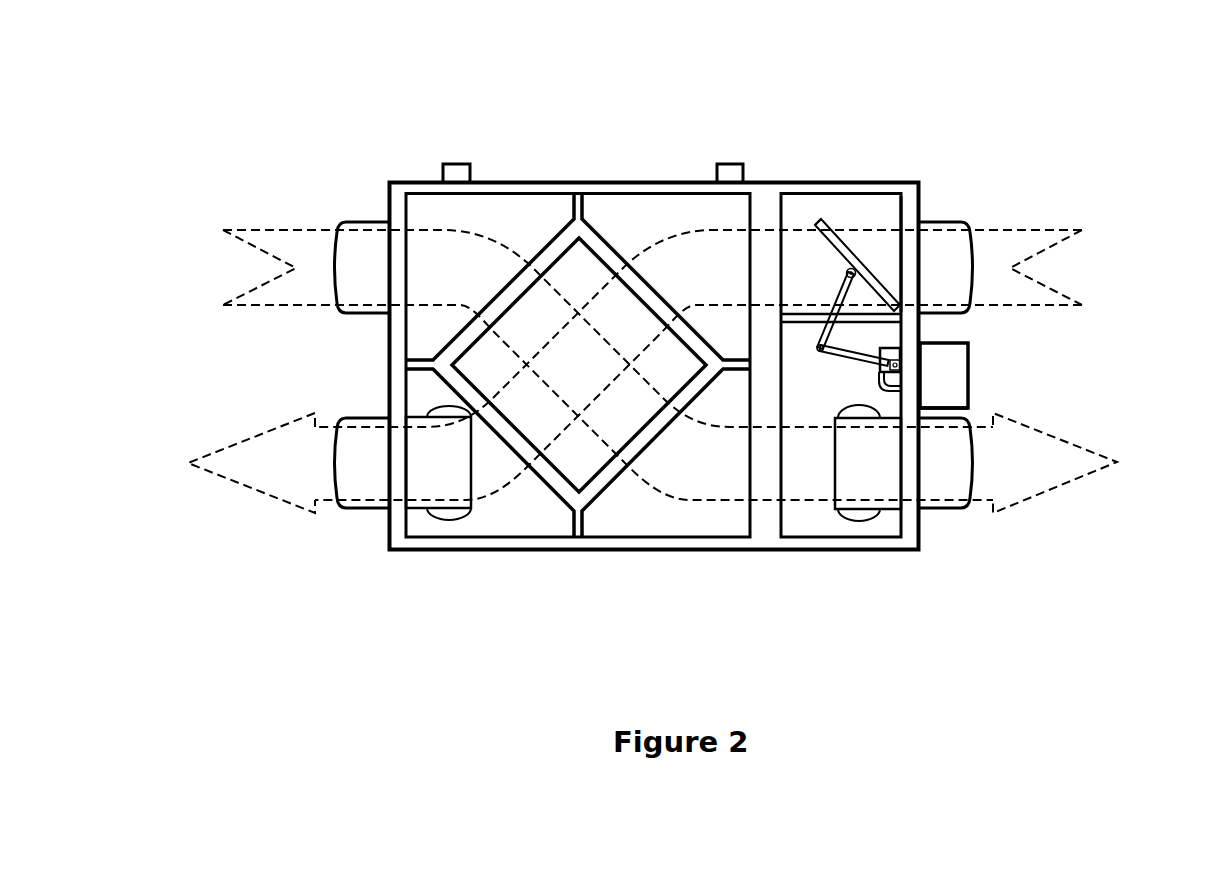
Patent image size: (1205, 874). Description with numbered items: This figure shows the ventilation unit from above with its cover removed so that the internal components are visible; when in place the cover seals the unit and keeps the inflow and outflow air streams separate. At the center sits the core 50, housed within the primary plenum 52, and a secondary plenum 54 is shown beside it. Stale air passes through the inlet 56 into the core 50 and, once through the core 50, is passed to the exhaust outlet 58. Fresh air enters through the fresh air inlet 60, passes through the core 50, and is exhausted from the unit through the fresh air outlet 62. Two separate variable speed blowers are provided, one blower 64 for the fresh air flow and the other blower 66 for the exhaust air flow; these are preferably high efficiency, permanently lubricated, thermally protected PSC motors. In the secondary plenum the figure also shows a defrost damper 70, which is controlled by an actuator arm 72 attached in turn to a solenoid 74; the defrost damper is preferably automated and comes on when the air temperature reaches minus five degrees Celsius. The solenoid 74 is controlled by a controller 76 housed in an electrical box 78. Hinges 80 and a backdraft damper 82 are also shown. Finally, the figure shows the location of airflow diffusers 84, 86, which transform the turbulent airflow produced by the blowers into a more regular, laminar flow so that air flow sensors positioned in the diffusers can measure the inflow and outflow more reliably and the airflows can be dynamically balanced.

The core 50 is at (582, 258).
The primary plenum 52 is at (730, 212).
The secondary plenum 54 is at (863, 213).
The inlet 56 is at (353, 222).
The exhaust outlet 58 is at (958, 510).
The fresh air inlet 60 is at (962, 222).
The fresh air outlet 62 is at (360, 507).
The variable speed blower 64 is at (440, 478).
The variable speed blower 66 is at (853, 480).
The defrost damper 70 is at (827, 198).
The actuator arm 72 is at (883, 347).
The solenoid 74 is at (893, 357).
The controller 76 is at (968, 378).
The electrical box 78 is at (968, 398).
The hinges 80 is at (858, 352).
The backdraft damper 82 is at (838, 222).
The airflow diffuser 84 is at (407, 245).
The airflow diffuser 86 is at (895, 226).